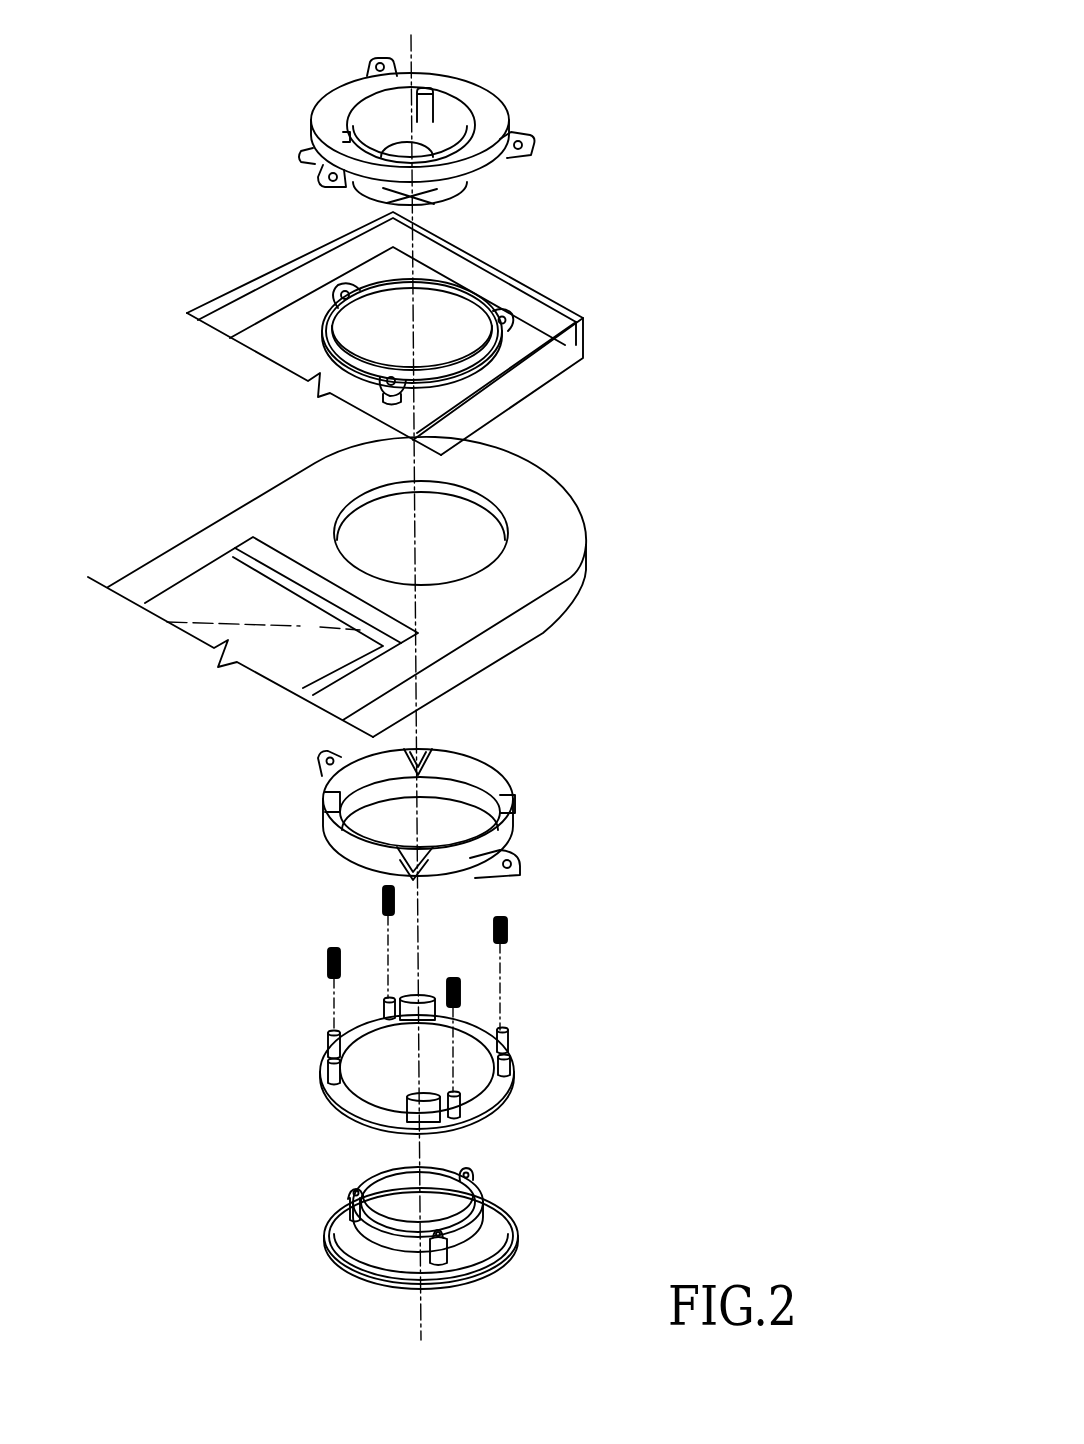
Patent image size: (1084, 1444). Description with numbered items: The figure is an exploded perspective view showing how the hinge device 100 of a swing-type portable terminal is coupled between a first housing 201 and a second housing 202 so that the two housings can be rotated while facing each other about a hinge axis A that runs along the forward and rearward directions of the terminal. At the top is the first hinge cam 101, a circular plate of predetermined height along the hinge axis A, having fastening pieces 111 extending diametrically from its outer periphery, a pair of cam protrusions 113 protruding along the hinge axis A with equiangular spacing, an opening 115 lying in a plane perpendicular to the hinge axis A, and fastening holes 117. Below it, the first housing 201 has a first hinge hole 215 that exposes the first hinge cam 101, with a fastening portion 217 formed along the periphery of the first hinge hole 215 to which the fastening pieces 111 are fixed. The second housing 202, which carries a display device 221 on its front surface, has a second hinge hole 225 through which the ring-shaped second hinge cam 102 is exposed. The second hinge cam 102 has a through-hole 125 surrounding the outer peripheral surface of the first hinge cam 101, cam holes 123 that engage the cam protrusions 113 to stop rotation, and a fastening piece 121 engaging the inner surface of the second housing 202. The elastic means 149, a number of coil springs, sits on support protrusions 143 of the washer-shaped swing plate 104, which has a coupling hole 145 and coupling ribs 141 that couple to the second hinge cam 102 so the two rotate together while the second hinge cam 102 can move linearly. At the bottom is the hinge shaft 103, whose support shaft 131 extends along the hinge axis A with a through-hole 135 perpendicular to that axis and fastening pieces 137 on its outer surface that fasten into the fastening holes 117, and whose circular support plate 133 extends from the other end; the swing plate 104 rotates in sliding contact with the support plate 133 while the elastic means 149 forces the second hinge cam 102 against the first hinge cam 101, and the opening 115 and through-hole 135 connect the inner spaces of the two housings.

The hinge device 100 is at (150, 25).
The first hinge cam 101 is at (517, 122).
The fastening pieces 111 is at (379, 65).
The cam protrusions 113 is at (313, 152).
The opening 115 is at (397, 150).
The fastening holes 117 is at (435, 100).
The first housing 201 is at (533, 284).
The first hinge hole 215 is at (437, 360).
The fastening portion 217 is at (505, 318).
The second housing 202 is at (583, 502).
The second hinge hole 225 is at (465, 553).
The display device 221 is at (293, 670).
The second hinge cam 102 is at (505, 768).
The fastening piece 121 is at (322, 763).
The cam holes 123 is at (431, 757).
The through-hole 125 is at (445, 823).
The elastic means 149 is at (395, 898).
The swing plate 104 is at (331, 1107).
The coupling ribs 141 is at (325, 1041).
The support protrusions 143 is at (506, 1032).
The coupling hole 145 is at (465, 1077).
The hinge shaft 103 is at (529, 1218).
The support shaft 131 is at (376, 1237).
The support plate 133 is at (506, 1257).
The through-hole 135 is at (448, 1216).
The fastening pieces 137 is at (473, 1176).
The hinge axis A is at (422, 1307).